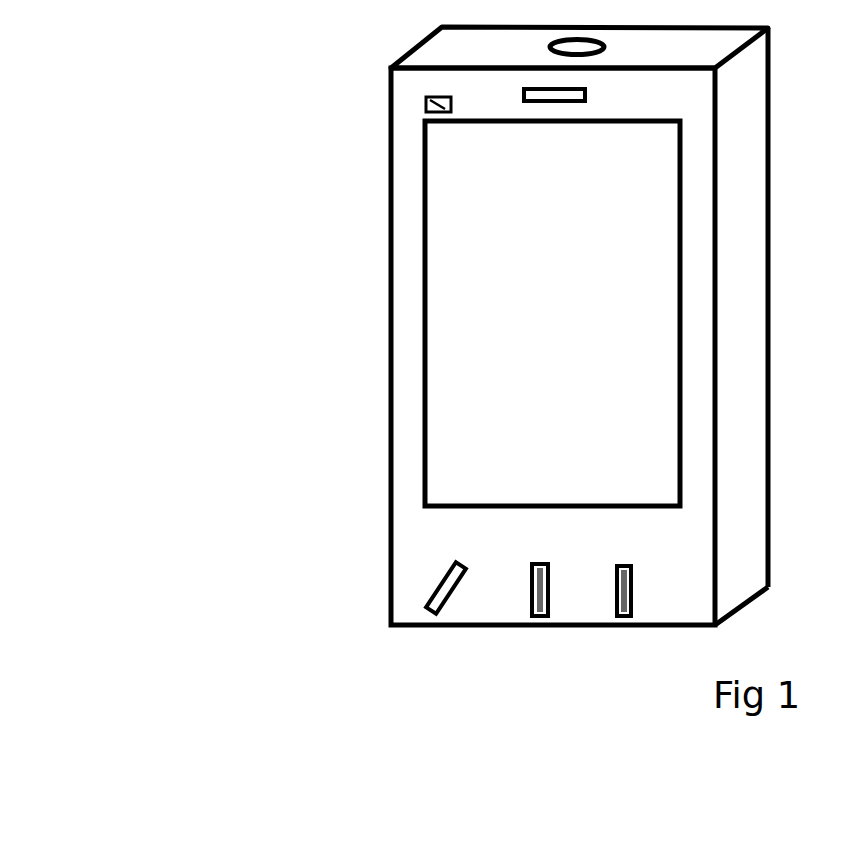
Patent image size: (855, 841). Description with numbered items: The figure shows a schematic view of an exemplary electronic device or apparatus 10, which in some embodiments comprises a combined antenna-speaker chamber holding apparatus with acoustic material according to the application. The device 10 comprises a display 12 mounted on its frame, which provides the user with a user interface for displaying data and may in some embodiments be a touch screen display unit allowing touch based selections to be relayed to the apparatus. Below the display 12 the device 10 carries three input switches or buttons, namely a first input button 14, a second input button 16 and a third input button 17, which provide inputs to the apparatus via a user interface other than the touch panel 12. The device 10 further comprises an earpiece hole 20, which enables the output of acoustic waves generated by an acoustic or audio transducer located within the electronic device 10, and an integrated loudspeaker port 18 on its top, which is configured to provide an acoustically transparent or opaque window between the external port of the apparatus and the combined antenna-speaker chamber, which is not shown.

The electronic device 10 is at (725, 607).
The display 12 is at (452, 391).
The input button 1 14 is at (450, 603).
The input button 2 16 is at (544, 618).
The input button 3 17 is at (627, 618).
The integrated loudspeaker port 18 is at (548, 48).
The earpiece hole 20 is at (515, 101).